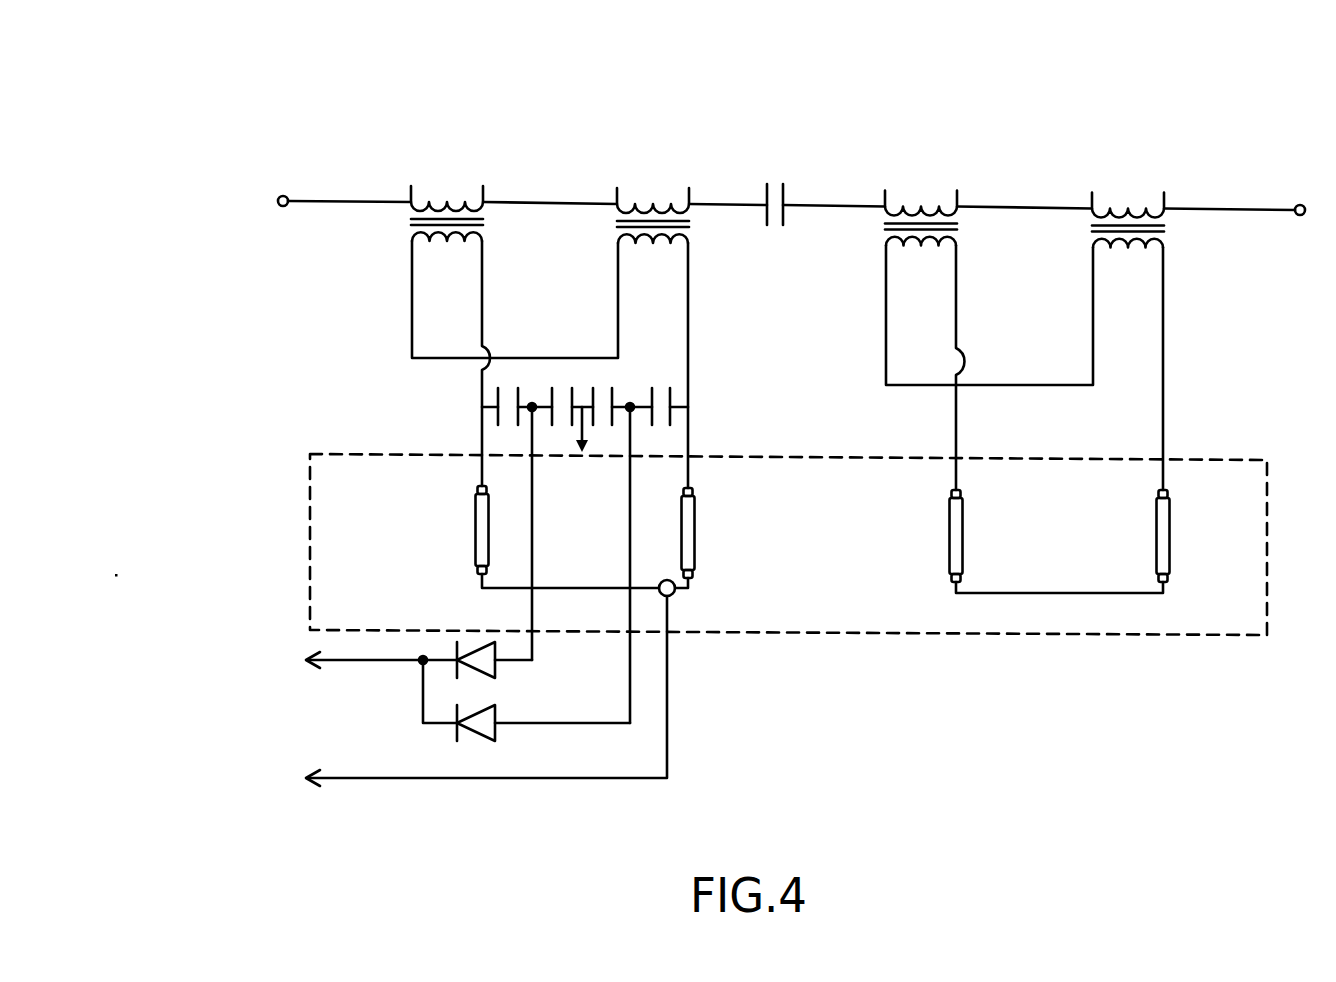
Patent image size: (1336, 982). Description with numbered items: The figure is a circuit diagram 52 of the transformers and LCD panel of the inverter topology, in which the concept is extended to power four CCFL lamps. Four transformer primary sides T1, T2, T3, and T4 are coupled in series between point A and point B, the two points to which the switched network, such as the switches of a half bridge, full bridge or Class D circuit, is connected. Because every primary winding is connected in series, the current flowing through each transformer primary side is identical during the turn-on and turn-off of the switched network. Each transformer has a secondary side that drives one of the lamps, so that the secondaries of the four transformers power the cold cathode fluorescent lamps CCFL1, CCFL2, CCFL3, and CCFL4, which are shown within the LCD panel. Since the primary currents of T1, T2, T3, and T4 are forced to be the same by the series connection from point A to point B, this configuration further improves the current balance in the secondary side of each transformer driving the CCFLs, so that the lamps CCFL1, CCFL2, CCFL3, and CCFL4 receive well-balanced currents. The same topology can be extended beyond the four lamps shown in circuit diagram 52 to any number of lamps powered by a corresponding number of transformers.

The circuit diagram 52 is at (519, 94).
The primary side T1 is at (447, 192).
The primary side T2 is at (653, 194).
The primary side T3 is at (921, 196).
The primary side T4 is at (1128, 199).
The CCFL lamp CCFL1 is at (436, 530).
The CCFL lamp CCFL2 is at (730, 533).
The CCFL lamp CCFL3 is at (913, 536).
The CCFL lamp CCFL4 is at (1206, 536).
The point A is at (269, 198).
The point B is at (1313, 208).